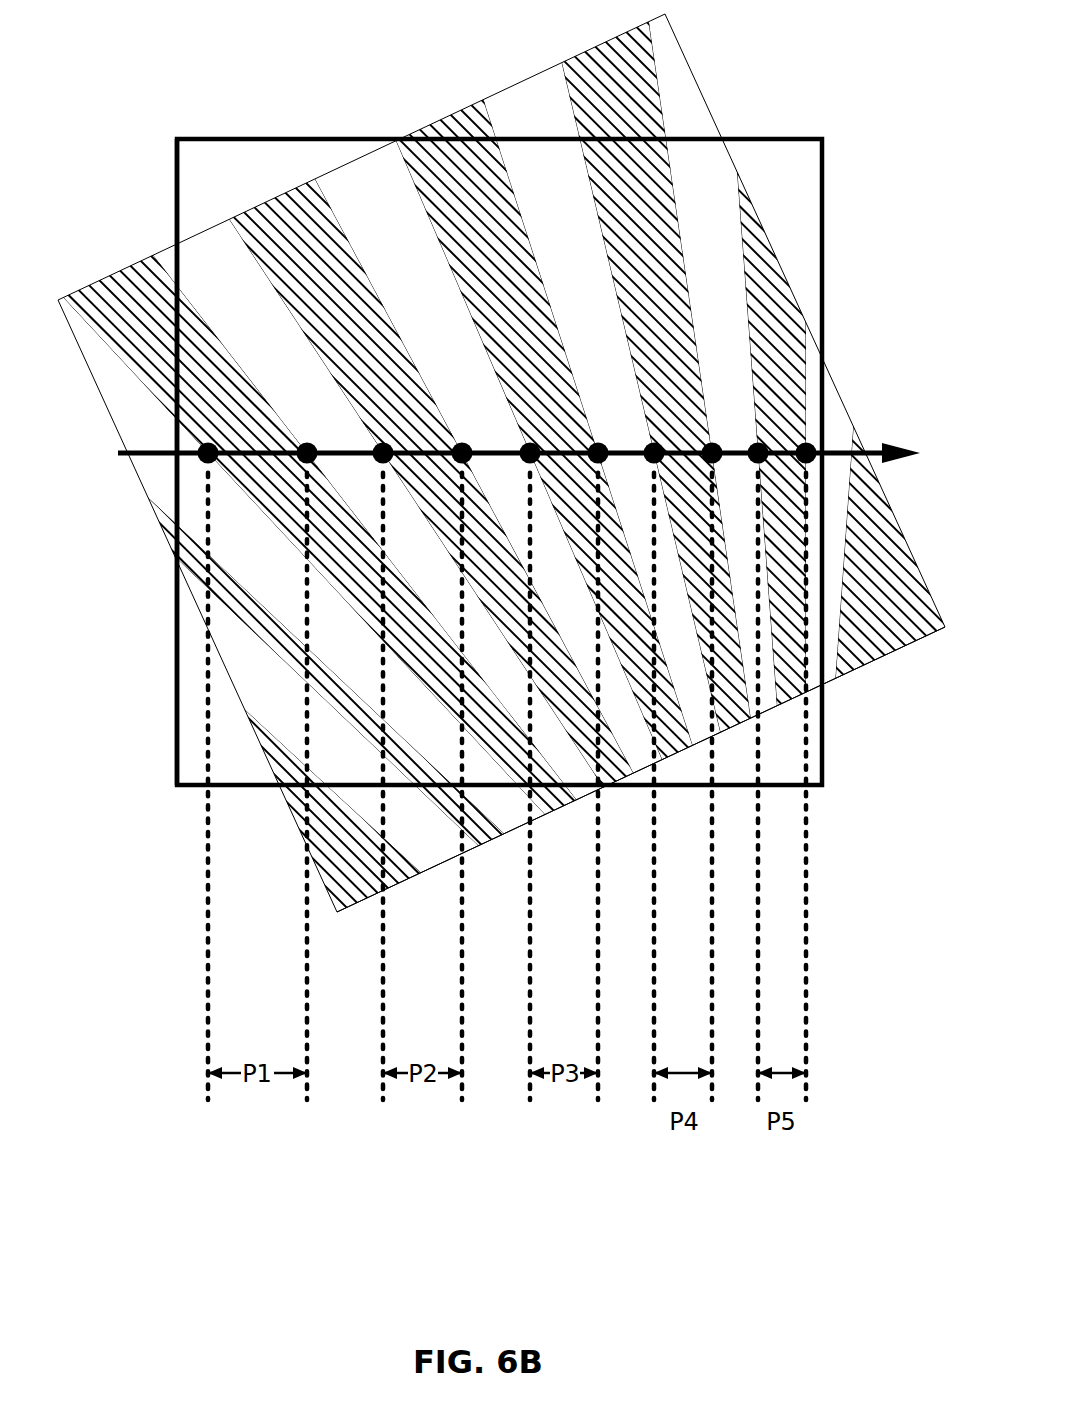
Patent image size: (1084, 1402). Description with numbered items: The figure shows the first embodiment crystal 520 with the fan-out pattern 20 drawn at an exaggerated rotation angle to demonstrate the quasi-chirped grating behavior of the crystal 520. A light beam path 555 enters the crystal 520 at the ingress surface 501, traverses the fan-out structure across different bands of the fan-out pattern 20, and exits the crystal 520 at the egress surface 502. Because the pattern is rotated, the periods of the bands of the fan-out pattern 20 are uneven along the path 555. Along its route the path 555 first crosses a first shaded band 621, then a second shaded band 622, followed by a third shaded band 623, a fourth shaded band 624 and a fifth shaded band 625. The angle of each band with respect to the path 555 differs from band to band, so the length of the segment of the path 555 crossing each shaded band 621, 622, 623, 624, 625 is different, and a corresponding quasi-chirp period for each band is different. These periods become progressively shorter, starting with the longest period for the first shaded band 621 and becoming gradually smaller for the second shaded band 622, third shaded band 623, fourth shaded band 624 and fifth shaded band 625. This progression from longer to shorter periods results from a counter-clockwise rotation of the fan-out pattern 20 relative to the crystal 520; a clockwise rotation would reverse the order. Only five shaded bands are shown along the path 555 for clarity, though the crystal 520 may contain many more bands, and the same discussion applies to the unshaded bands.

The fan-out pattern 20 is at (882, 678).
The ingress surface 501 is at (178, 720).
The egress surface 502 is at (825, 263).
The crystal 520 is at (138, 115).
The path 555 is at (163, 456).
The first shaded band 621 is at (218, 397).
The second shaded band 622 is at (367, 342).
The third shaded band 623 is at (525, 280).
The fourth shaded band 624 is at (690, 280).
The fifth shaded band 625 is at (778, 285).